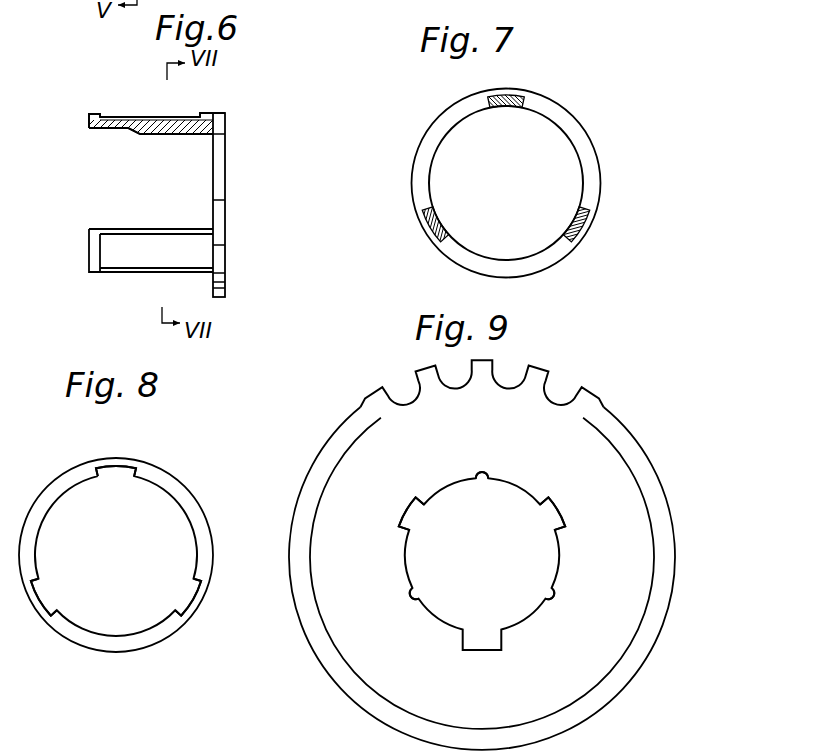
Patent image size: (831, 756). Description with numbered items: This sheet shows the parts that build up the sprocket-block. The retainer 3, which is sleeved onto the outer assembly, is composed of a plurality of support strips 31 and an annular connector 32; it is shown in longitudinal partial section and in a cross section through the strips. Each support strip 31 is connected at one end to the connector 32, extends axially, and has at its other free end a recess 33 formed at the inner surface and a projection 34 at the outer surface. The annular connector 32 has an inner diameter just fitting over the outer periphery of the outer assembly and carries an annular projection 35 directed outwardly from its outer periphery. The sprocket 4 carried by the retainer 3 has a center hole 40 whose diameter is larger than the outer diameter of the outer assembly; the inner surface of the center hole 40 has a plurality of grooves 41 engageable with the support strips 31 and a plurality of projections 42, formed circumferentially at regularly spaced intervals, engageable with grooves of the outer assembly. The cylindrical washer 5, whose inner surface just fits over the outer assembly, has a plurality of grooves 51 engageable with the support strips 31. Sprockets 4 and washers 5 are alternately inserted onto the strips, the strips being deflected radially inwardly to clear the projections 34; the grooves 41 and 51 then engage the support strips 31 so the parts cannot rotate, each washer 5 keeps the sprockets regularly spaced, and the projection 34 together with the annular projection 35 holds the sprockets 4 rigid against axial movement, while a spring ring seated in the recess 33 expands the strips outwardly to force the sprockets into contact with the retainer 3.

In FIG. 6, the retainer 3 is at (229, 156).
In FIG. 7, the retainer 3 is at (592, 129).
In FIG. 6, the support strips 31 is at (163, 118).
In FIG. 7, the support strips 31 is at (513, 93).
In FIG. 6, the annular connector 32 is at (222, 215).
In FIG. 7, the annular connector 32 is at (597, 177).
In FIG. 6, the recess 33 is at (105, 130).
In FIG. 6, the projection 34 is at (95, 114).
In FIG. 6, the annular projection 35 is at (220, 114).
In FIG. 9, the sprocket 4 is at (553, 393).
In FIG. 9, the center hole 40 is at (518, 627).
In FIG. 9, the grooves 41 is at (403, 513).
In FIG. 9, the projections 42 is at (482, 482).
In FIG. 8, the washer 5 is at (188, 478).
In FIG. 8, the grooves 51 is at (116, 466).